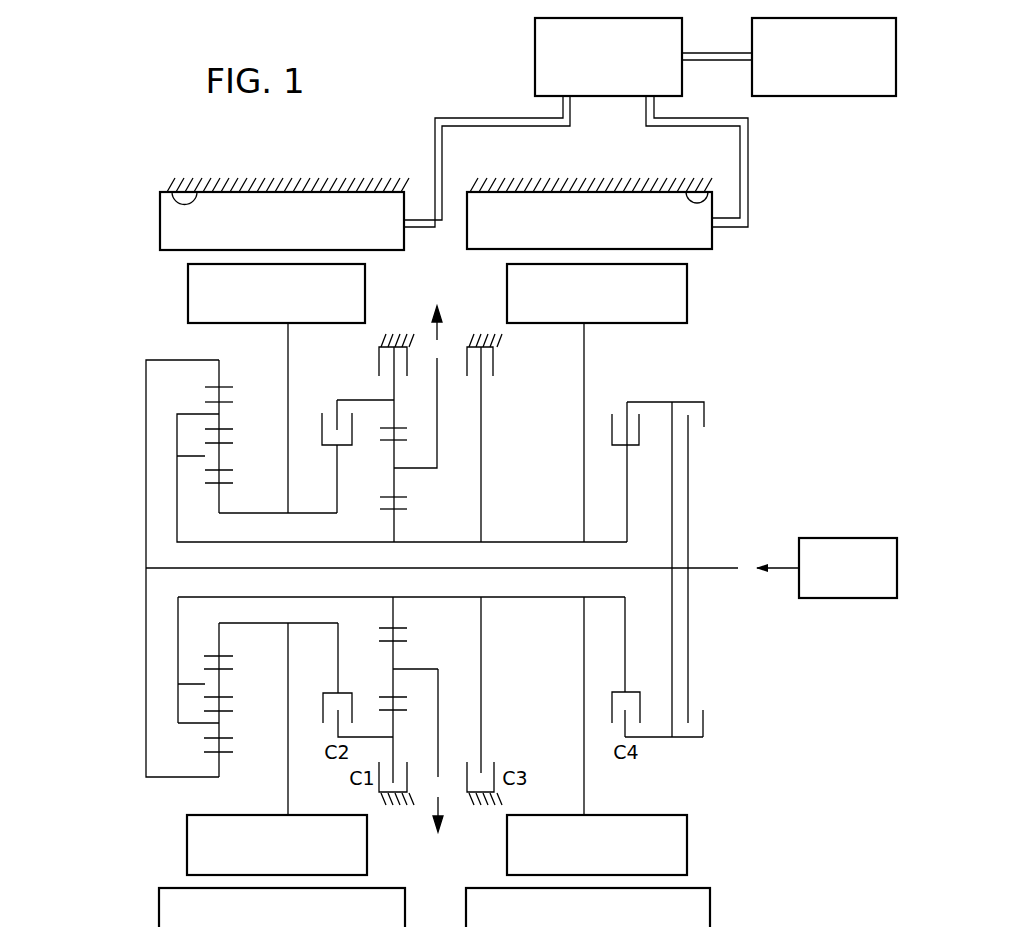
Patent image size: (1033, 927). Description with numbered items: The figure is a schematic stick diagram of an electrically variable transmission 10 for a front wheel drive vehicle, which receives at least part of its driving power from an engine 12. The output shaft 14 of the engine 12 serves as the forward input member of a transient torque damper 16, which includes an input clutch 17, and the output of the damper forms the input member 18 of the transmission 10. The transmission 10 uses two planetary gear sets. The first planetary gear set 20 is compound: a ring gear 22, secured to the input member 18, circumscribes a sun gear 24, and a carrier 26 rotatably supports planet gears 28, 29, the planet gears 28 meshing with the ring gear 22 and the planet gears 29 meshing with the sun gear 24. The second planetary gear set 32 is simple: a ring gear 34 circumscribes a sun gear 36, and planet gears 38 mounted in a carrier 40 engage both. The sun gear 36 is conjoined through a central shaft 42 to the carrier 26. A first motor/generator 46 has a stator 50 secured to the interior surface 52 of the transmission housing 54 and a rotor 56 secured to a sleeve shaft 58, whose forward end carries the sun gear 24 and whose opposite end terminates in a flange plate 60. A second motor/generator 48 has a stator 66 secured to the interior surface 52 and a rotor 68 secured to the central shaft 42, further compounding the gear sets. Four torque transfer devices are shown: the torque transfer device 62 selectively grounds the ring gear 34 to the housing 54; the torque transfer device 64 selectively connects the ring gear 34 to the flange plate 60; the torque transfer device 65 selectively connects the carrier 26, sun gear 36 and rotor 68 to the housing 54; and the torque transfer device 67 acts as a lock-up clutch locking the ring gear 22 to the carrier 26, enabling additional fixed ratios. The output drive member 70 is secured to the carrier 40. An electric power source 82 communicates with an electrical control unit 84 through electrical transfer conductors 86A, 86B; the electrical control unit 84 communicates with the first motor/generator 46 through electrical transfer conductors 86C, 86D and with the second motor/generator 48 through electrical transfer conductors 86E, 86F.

The electrically variable transmission 10 is at (85, 378).
The engine 12 is at (845, 598).
The output shaft 14 is at (713, 567).
The transient torque damper 16 is at (715, 405).
The input clutch 17 is at (705, 740).
The input member 18 is at (645, 570).
The first planetary gear set 20 is at (203, 380).
The ring gear 22 is at (235, 388).
The sun gear 24 is at (235, 483).
The carrier 26 is at (158, 438).
The planet gear 28 is at (235, 402).
The planet gear 29 is at (235, 443).
The second planetary gear set 32 is at (379, 398).
The ring gear 34 is at (400, 428).
The sun gear 36 is at (400, 512).
The planet gear 38 is at (385, 448).
The carrier 40 is at (407, 475).
The central shaft 42 is at (203, 541).
The first motor/generator 46 is at (133, 248).
The second motor/generator 48 is at (728, 258).
The stator 50 is at (160, 205).
The interior surface 52 is at (174, 190).
The transmission housing 54 is at (393, 333).
The rotor 56 is at (188, 291).
The sleeve shaft 58 is at (262, 515).
The flange plate 60 is at (340, 490).
The torque transfer device 62 is at (373, 357).
The torque transfer device 64 is at (320, 410).
The torque transfer device 65 is at (503, 385).
The stator 66 is at (466, 228).
The torque transfer device 67 is at (612, 408).
The rotor 68 is at (688, 300).
The output drive member 70 is at (447, 819).
The electric power source 82 is at (858, 97).
The electrical control unit 84 is at (535, 50).
The electrical transfer conductor 86A is at (719, 52).
The electrical transfer conductor 86B is at (722, 61).
The electrical transfer conductor 86C is at (446, 117).
The electrical transfer conductor 86D is at (500, 125).
The electrical transfer conductor 86E is at (748, 157).
The electrical transfer conductor 86F is at (740, 190).